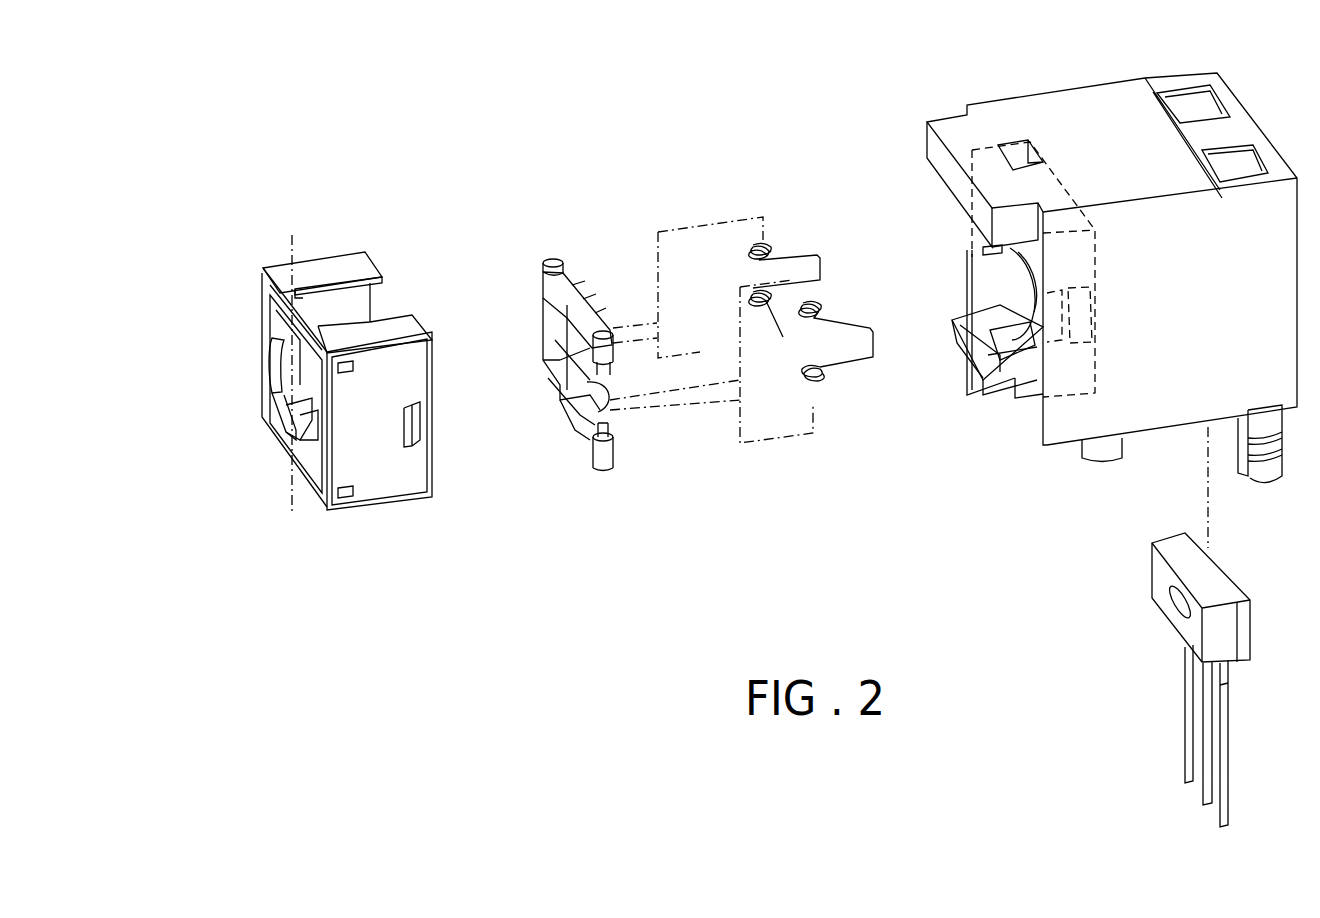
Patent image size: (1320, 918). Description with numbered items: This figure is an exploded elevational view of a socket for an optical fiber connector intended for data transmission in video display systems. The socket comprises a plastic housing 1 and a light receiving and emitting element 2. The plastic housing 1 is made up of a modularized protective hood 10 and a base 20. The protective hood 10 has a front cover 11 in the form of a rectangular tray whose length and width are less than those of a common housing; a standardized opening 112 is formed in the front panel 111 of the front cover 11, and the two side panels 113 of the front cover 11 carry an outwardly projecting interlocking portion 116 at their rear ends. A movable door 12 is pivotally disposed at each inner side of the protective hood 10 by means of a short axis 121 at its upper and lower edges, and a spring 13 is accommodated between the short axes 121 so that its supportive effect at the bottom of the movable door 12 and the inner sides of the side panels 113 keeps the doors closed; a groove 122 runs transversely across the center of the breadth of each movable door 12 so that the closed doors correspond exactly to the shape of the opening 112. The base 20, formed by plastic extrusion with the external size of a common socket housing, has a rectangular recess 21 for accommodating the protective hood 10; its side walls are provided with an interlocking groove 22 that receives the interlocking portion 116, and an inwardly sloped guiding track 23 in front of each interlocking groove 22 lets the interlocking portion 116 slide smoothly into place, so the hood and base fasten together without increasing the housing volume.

The plastic housing 1 is at (913, 43).
The protective hood 10 is at (745, 147).
The front cover 11 is at (348, 527).
The front panel 111 is at (267, 421).
The opening 112 is at (292, 377).
The side panels 113 is at (383, 477).
The interlocking portion 116 is at (420, 432).
The movable door 12 is at (618, 412).
The short axis 121 is at (543, 265).
The groove 122 is at (563, 362).
The spring 13 is at (813, 397).
The base 20 is at (1013, 107).
The rectangular recess 21 is at (1000, 293).
The interlocking groove 22 is at (1000, 293).
The guiding track 23 is at (977, 238).
The light receiving and emitting element 2 is at (1250, 625).